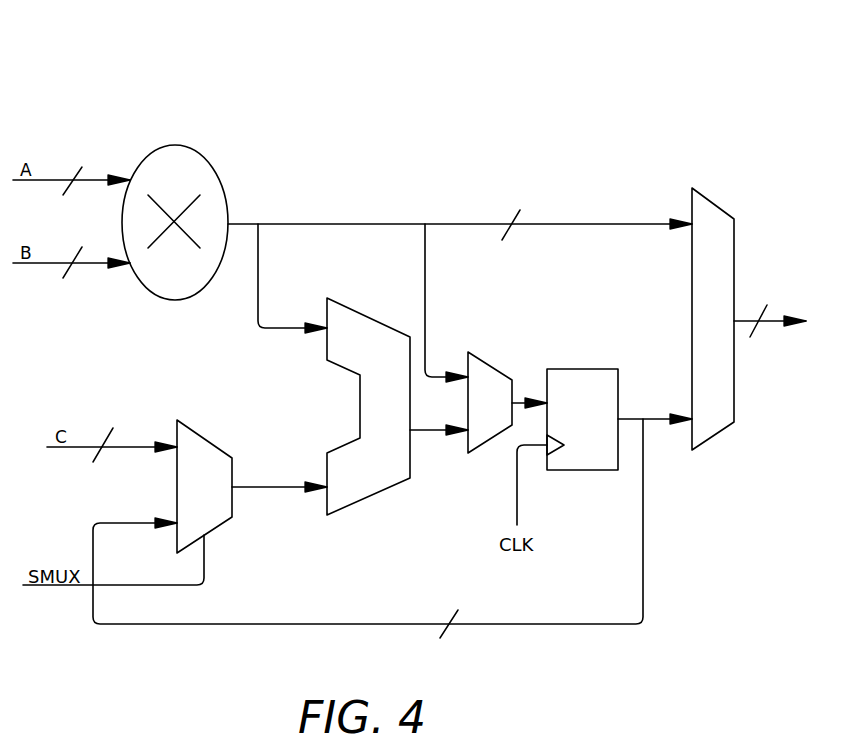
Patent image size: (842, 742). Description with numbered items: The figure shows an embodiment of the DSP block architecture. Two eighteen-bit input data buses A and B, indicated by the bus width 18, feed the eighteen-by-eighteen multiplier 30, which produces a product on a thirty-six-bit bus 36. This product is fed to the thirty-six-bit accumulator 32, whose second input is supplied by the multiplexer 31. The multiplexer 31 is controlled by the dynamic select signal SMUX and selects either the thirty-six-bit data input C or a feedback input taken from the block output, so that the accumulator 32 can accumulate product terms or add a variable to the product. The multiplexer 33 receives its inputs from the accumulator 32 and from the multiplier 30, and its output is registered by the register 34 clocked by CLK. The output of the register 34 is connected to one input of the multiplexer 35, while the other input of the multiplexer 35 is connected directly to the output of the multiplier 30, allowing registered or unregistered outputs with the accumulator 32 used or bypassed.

The data bus width 18 is at (80, 167).
The multiplier 30 is at (203, 149).
The multiplexer 31 is at (212, 437).
The accumulator 32 is at (387, 326).
The multiplexer 33 is at (494, 351).
The register 34 is at (605, 471).
The multiplexer 35 is at (712, 200).
The data bus width 36 is at (520, 210).